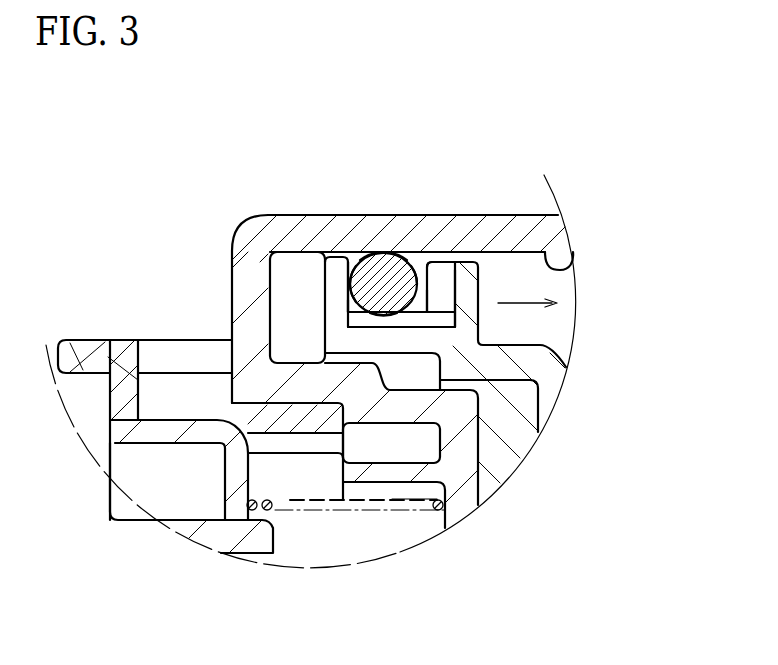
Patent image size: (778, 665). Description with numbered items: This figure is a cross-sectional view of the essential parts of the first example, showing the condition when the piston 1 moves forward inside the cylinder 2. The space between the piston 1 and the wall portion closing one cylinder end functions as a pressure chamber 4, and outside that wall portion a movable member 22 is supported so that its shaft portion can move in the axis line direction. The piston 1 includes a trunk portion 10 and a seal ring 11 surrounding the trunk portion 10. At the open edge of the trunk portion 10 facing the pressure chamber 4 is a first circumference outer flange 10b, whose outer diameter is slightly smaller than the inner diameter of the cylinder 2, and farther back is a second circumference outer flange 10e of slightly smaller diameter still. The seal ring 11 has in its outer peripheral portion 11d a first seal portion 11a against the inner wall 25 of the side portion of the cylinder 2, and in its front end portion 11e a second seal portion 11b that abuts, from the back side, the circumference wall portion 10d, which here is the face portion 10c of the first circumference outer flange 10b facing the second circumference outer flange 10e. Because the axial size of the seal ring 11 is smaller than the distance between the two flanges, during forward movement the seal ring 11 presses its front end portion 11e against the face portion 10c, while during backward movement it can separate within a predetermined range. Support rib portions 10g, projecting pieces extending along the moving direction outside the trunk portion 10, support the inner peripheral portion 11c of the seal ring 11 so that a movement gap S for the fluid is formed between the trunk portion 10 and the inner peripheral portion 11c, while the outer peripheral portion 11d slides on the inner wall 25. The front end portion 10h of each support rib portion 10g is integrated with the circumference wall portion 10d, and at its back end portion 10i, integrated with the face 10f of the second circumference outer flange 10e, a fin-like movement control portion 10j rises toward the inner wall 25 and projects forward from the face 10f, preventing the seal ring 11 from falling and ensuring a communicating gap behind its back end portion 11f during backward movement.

The piston 1 is at (553, 385).
The cylinder 2 is at (488, 215).
The pressure chamber 4 is at (297, 258).
The trunk portion 10 is at (432, 415).
The first circumference outer flange 10b is at (337, 258).
The face portion 10c is at (348, 288).
The circumference wall portion 10d is at (268, 290).
The second circumference outer flange 10e is at (470, 283).
The face 10f is at (447, 297).
The support rib portion 10g is at (372, 325).
The front end portion 10h is at (348, 322).
The back end portion 10i is at (447, 317).
The movement control portion 10j is at (440, 270).
The seal ring 11 is at (398, 256).
The first seal portion 11a is at (383, 262).
The second seal portion 11b is at (352, 272).
The inner peripheral portion 11c is at (408, 316).
The outer peripheral portion 11d is at (407, 159).
The front end portion 11e is at (246, 245).
The back end portion 11f is at (417, 300).
The movable member 22 is at (140, 472).
The inner wall 25 is at (568, 264).
The movement gap S is at (432, 330).